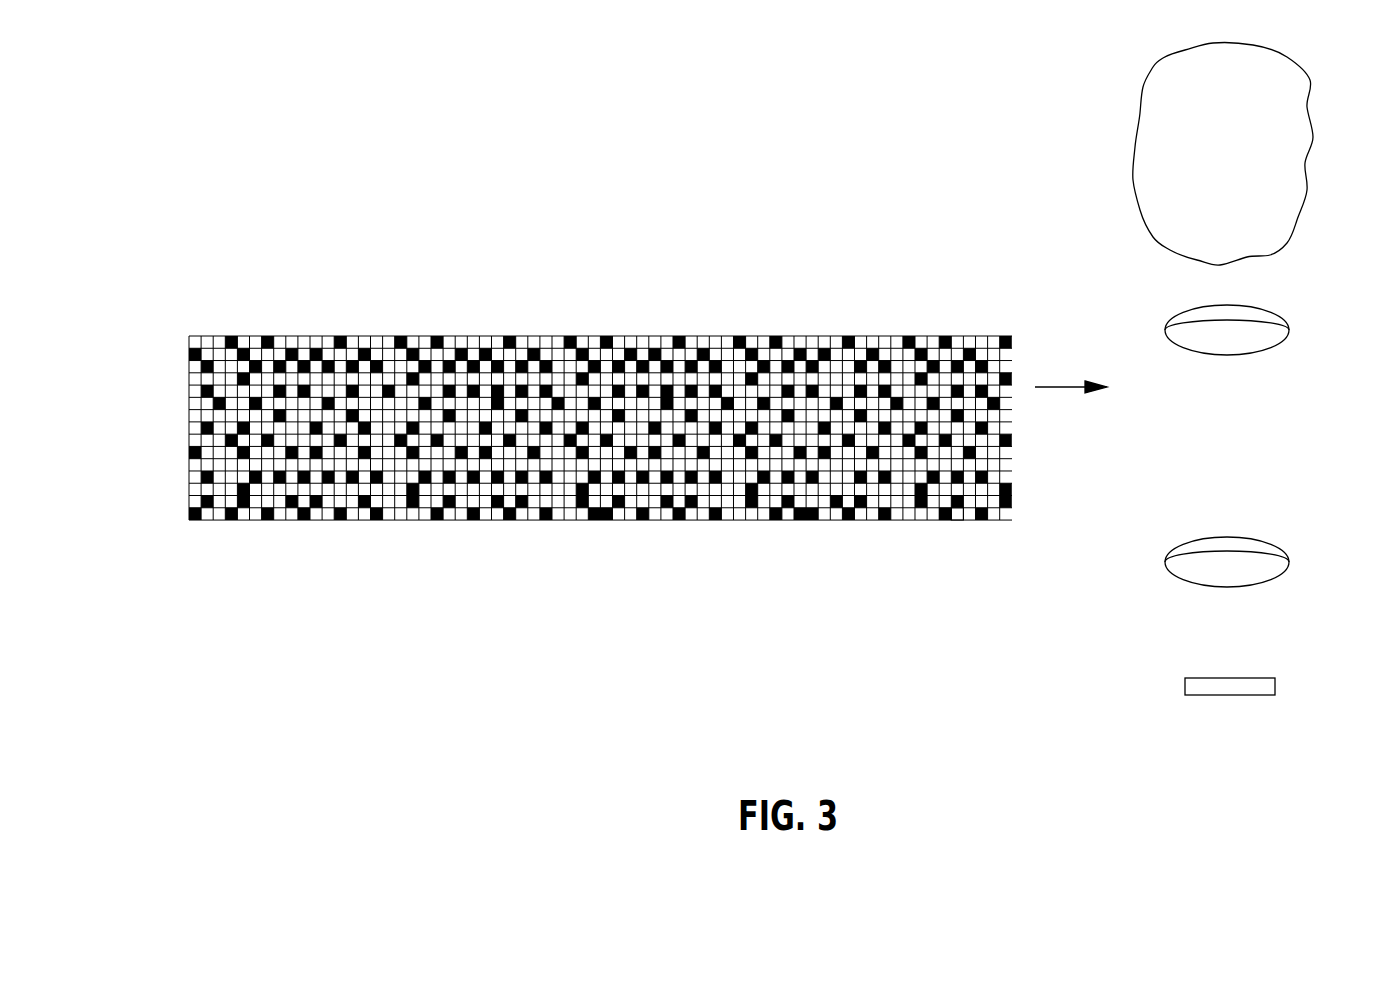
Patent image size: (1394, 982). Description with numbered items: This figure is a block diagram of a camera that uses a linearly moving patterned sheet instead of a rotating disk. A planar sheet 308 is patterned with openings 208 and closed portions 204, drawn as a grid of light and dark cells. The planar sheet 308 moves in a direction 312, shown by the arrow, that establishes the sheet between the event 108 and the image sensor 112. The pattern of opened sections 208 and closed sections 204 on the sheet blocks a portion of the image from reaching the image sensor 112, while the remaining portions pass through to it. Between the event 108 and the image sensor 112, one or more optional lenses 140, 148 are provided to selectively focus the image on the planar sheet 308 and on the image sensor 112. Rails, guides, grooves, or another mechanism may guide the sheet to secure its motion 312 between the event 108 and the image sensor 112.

The event 108 is at (1207, 209).
The image sensor 112 is at (1202, 697).
The lens 140 is at (1278, 338).
The lens 148 is at (1278, 567).
The closed portions 204 is at (947, 519).
The openings 208 is at (960, 519).
The planar sheet 308 is at (552, 337).
The direction 312 is at (1058, 387).